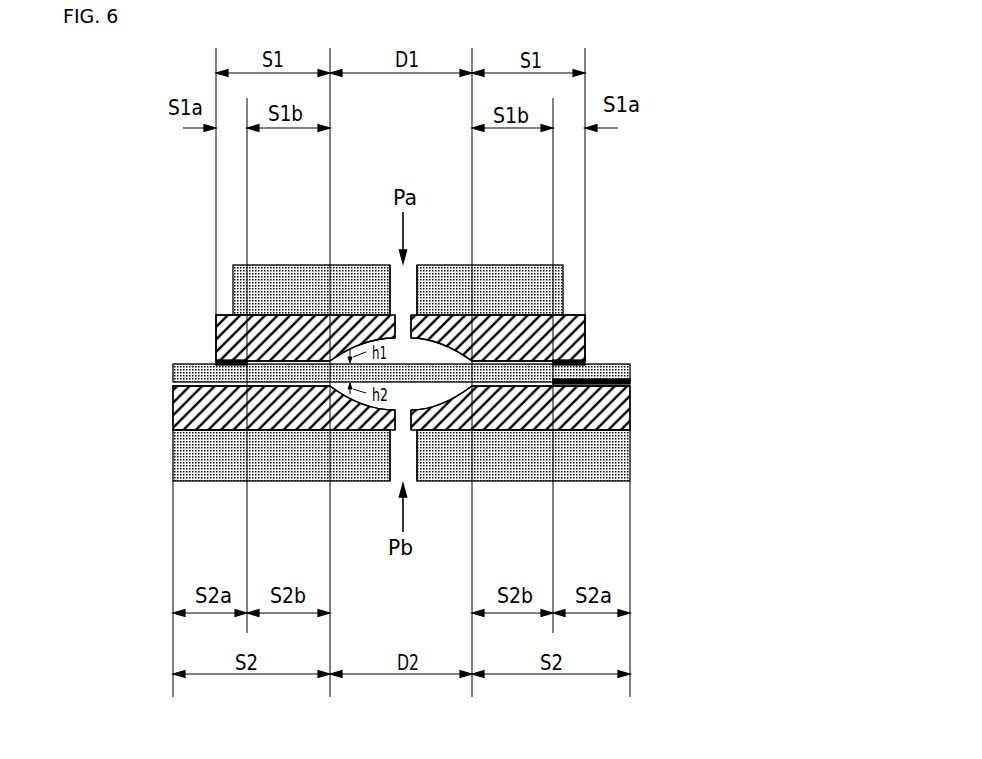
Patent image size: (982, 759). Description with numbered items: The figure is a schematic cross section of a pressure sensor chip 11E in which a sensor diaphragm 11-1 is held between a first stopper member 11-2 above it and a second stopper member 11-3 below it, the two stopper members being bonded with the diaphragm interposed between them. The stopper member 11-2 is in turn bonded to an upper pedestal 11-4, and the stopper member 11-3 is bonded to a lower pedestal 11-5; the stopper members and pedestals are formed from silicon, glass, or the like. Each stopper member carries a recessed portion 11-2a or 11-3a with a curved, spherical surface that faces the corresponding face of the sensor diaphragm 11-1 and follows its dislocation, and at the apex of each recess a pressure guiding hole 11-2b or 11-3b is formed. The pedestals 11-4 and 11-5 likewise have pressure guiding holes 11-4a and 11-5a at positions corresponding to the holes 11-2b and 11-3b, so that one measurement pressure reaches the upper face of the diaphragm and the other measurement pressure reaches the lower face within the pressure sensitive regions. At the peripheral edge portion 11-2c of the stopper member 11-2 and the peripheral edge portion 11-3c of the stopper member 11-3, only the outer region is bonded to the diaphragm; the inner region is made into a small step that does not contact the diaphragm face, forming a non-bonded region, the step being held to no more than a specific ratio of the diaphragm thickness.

The pressure sensor chip 11E is at (565, 247).
The sensor diaphragm 11-1 is at (632, 374).
The stopper member 11-2 is at (585, 322).
The recessed portion 11-2a is at (437, 345).
The pressure guiding hole 11-2b is at (406, 326).
The peripheral edge portion 11-2c is at (270, 347).
The stopper member 11-3 is at (632, 413).
The recessed portion 11-3a is at (432, 397).
The pressure guiding hole 11-3b is at (406, 422).
The peripheral edge portion 11-3c is at (272, 425).
The pedestal 11-4 is at (565, 268).
The pressure guiding hole 11-4a is at (401, 280).
The pedestal 11-5 is at (190, 468).
The pressure guiding hole 11-5a is at (397, 460).